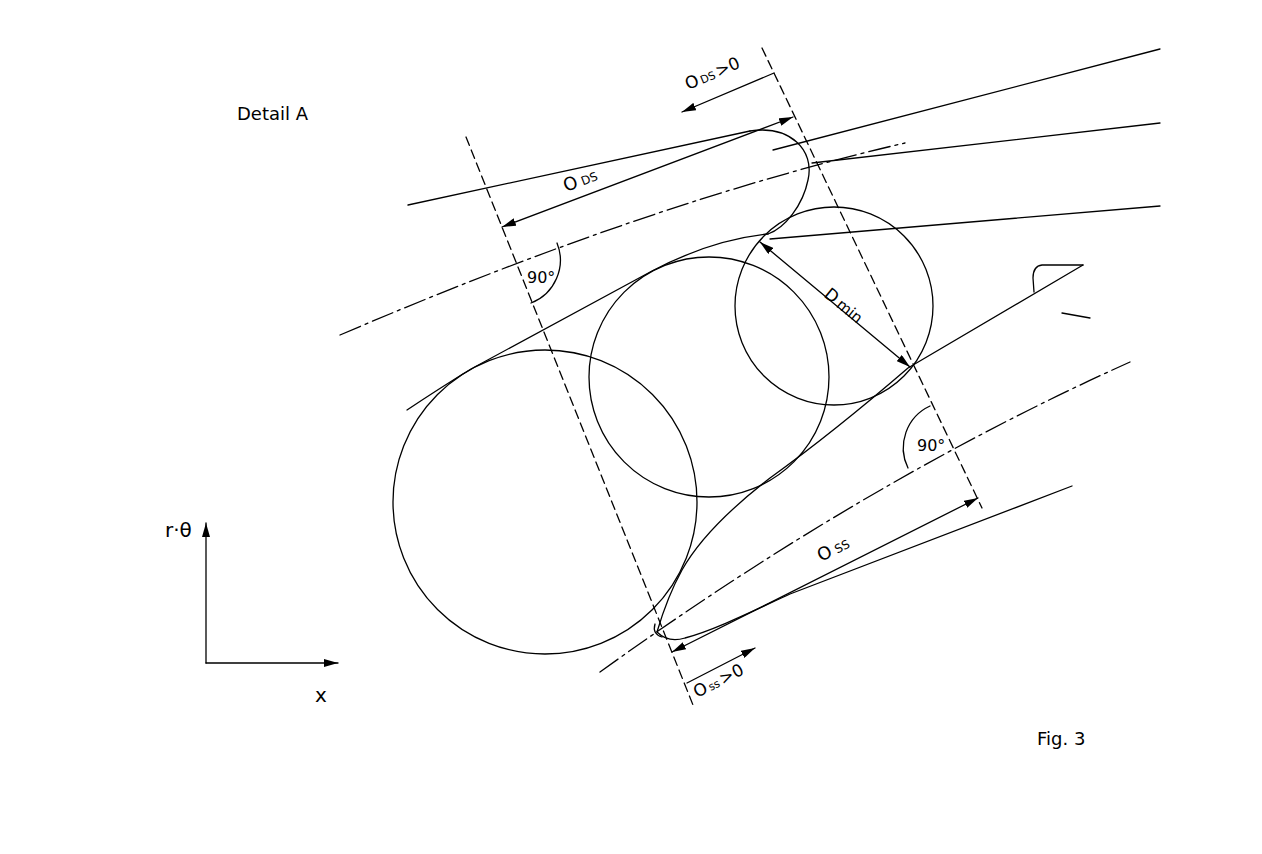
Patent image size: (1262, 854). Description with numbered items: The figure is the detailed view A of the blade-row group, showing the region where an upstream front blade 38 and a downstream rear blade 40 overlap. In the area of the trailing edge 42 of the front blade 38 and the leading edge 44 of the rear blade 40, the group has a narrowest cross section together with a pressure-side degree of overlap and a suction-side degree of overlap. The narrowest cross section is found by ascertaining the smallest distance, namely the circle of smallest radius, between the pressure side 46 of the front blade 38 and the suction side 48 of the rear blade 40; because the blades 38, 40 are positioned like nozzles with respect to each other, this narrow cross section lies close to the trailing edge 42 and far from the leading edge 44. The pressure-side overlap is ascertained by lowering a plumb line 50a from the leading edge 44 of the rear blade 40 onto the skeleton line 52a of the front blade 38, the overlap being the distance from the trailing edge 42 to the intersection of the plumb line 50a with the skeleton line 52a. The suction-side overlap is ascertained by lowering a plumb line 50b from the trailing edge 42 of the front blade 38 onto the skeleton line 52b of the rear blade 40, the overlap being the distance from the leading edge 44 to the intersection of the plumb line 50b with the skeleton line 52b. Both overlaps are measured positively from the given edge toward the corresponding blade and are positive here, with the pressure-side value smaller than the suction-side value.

The front blade 38 is at (1160, 49).
The trailing edge 42 is at (1160, 123).
The pressure side 46 is at (1160, 206).
The suction side 48 is at (1083, 265).
The rear blade 40 is at (1090, 318).
The plumb line 50a is at (595, 476).
The plumb line 50b is at (878, 347).
The skeleton line 52a is at (493, 268).
The skeleton line 52b is at (978, 433).
The leading edge 44 is at (657, 632).